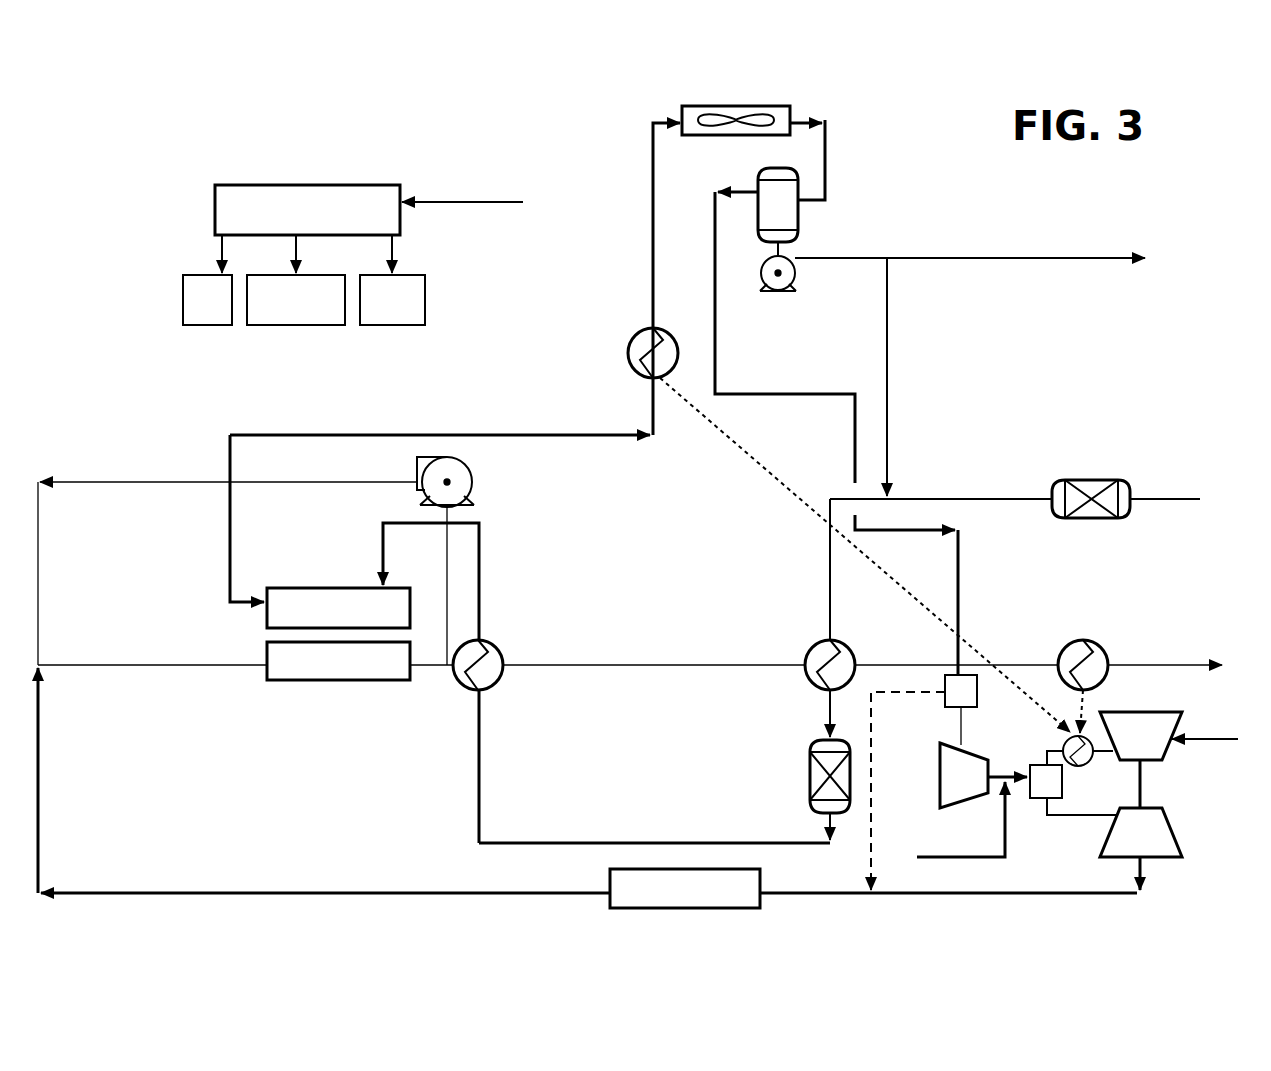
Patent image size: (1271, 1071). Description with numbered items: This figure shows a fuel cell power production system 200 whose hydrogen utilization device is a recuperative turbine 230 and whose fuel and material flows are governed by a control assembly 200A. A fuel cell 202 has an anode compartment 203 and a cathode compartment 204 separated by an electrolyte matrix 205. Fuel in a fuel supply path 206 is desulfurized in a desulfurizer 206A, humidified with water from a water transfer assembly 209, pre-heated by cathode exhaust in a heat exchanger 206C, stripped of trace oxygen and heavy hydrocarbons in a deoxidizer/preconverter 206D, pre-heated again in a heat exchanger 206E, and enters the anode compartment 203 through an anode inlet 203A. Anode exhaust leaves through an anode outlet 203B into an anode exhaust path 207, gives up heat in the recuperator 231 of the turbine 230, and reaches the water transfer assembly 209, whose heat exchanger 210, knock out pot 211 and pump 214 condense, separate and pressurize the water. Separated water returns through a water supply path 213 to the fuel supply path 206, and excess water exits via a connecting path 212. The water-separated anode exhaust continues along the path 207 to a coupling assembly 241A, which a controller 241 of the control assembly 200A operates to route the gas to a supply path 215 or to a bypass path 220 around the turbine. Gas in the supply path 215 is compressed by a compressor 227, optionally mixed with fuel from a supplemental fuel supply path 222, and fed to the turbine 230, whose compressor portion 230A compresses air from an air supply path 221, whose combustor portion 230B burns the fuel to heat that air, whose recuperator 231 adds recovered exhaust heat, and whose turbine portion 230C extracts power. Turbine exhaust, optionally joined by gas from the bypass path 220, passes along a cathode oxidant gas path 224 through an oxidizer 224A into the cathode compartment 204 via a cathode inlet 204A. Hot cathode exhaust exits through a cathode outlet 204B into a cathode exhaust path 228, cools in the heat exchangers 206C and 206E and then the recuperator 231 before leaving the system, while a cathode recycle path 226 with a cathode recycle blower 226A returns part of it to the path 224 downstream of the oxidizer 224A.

The system 200 is at (585, 166).
The control assembly 200A is at (300, 148).
The controller 241 is at (330, 185).
The coupling assembly 241A is at (945, 690).
The fuel cell 202 is at (280, 634).
The anode compartment 203 is at (355, 588).
The anode inlet 203A is at (384, 572).
The anode outlet 203B is at (262, 588).
The cathode compartment 204 is at (320, 680).
The cathode inlet 204A is at (262, 672).
The cathode outlet 204B is at (412, 668).
The electrolyte matrix 205 is at (262, 660).
The fuel supply path 206 is at (940, 498).
The desulfurizer 206A is at (1080, 480).
The heat exchanger 206C is at (850, 646).
The deoxidizer/preconverter 206D is at (810, 768).
The heat exchanger 206E is at (500, 650).
The anode exhaust path 207 is at (718, 372).
The water transfer assembly 209 is at (840, 168).
The heat exchanger 210 is at (745, 106).
The knock out pot 211 is at (765, 182).
The connecting path 212 is at (940, 258).
The water supply path 213 is at (887, 322).
The pump 214 is at (785, 256).
The supply path 215 is at (958, 740).
The bypass path 220 is at (870, 752).
The air supply path 221 is at (1212, 745).
The supplemental fuel supply path 222 is at (1007, 820).
The cathode oxidant gas path 224 is at (1012, 893).
The oxidizer 224A is at (762, 888).
The cathode recycle path 226 is at (447, 622).
The cathode recycle blower 226A is at (460, 480).
The compressor 227 is at (950, 785).
The cathode exhaust path 228 is at (705, 664).
The recuperative turbine 230 is at (1149, 771).
The compressor portion 230A is at (1130, 722).
The combustor portion 230B is at (1047, 786).
The turbine portion 230C is at (1165, 848).
The recuperator 231 is at (650, 338).